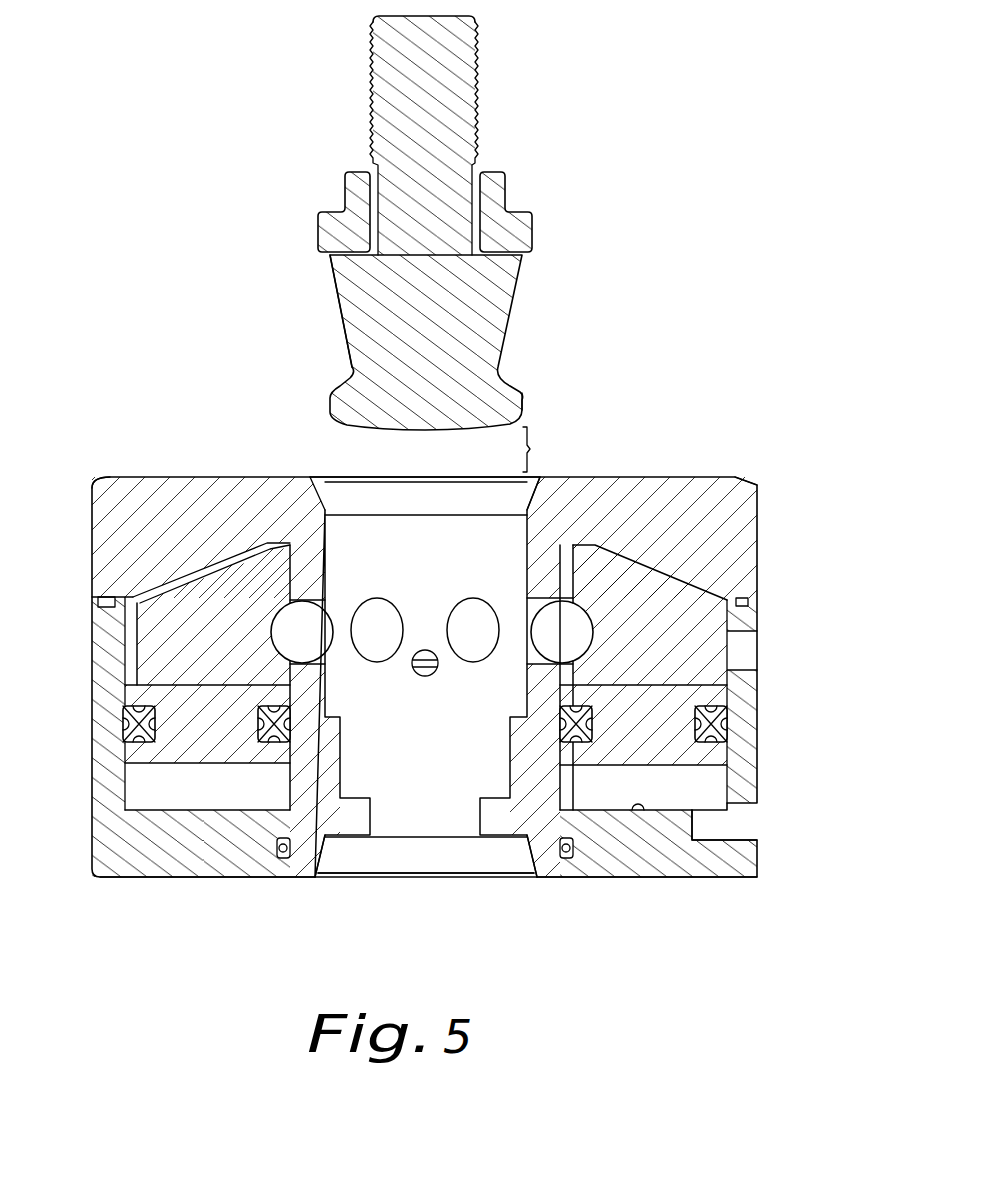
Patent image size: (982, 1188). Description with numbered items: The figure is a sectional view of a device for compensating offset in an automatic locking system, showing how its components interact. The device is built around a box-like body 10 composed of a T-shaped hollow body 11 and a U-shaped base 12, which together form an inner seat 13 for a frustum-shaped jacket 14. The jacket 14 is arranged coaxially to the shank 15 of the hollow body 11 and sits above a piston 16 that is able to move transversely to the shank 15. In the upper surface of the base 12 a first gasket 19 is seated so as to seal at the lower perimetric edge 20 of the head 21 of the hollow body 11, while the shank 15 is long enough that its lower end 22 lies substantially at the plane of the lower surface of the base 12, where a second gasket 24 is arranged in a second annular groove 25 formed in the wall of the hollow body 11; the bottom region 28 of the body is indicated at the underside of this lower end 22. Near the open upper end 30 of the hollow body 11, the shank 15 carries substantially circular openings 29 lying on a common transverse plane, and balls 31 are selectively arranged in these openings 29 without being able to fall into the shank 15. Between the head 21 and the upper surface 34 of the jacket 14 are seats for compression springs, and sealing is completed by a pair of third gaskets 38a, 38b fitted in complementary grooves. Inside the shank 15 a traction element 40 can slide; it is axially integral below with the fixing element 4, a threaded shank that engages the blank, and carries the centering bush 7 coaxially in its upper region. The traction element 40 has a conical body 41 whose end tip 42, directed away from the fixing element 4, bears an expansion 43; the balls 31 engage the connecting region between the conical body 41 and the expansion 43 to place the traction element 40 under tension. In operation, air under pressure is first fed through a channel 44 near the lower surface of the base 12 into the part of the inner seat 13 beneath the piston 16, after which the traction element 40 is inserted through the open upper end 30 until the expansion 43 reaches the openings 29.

The fixing element 4 is at (475, 57).
The centering bush 7 is at (538, 186).
The box-like body 10 is at (738, 465).
The T-shaped hollow body 11 is at (100, 468).
The U-shaped base 12 is at (107, 890).
The inner seat 13 is at (165, 798).
The frustum-shaped jacket 14 is at (709, 648).
The shank 15 is at (325, 527).
The piston 16 is at (142, 765).
The first gasket 19 is at (97, 600).
The lower perimetric edge 20 is at (158, 590).
The head 21 is at (711, 518).
The lower end 22 is at (530, 870).
The second gasket 24 is at (283, 852).
The second annular groove 25 is at (568, 855).
The bottom part 28 is at (470, 882).
The openings 29 is at (445, 622).
The open upper end 30 is at (328, 468).
The balls 31 is at (470, 648).
The upper surface 34 is at (198, 572).
The third gasket 38a is at (123, 722).
The third gasket 38b is at (290, 730).
The traction element 40 is at (550, 328).
The conical body 41 is at (333, 292).
The end tip 42 is at (530, 404).
The expansion 43 is at (448, 424).
The channel 44 is at (750, 824).